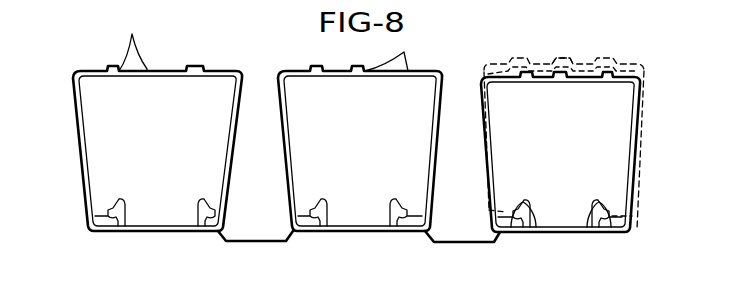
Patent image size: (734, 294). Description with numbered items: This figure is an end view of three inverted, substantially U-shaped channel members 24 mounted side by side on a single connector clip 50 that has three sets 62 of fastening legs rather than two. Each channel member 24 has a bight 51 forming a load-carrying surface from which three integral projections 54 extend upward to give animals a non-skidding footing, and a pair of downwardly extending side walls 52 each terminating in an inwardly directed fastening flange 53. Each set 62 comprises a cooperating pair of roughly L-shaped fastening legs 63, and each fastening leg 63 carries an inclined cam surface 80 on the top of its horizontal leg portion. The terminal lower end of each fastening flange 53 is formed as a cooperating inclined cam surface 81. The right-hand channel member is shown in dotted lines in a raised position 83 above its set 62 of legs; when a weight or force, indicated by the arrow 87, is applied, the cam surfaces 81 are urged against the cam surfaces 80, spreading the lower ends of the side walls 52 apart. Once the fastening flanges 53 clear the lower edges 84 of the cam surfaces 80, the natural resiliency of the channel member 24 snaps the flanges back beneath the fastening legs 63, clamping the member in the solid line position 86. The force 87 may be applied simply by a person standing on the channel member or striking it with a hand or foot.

The channel member 24 is at (76, 122).
The connector clip 50 is at (381, 250).
The bight 51 is at (179, 58).
The side wall 52 is at (231, 118).
The fastening flange 53 is at (492, 224).
The projection 54 is at (412, 50).
The set of fastening legs 62 is at (168, 195).
The fastening leg 63 is at (110, 207).
The inclined cam surface 80 is at (519, 204).
The cooperating inclined cam surface 81 is at (115, 219).
The raised position 83 is at (641, 59).
The lower edge of cam surface 84 is at (514, 227).
The solid line position 86 is at (647, 89).
The arrow indicating force 87 is at (563, 54).